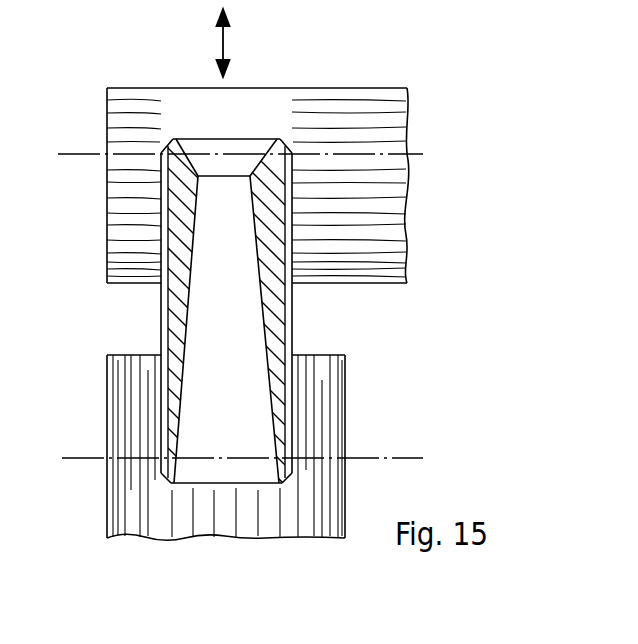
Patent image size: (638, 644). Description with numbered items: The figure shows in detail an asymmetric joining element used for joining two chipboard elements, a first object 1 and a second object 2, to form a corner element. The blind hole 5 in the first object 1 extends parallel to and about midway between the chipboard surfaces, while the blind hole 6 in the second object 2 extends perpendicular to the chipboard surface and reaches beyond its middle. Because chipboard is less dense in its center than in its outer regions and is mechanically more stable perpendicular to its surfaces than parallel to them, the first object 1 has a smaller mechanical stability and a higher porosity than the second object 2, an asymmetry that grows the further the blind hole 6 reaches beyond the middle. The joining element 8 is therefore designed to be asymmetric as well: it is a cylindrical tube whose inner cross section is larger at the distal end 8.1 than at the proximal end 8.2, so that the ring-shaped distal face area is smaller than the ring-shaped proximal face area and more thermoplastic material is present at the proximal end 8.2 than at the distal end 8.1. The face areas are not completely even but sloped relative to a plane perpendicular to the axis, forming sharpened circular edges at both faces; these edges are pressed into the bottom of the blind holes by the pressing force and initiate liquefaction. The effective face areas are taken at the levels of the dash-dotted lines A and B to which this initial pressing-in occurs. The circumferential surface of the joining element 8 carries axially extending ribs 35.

The first object 1 is at (107, 383).
The second object 2 is at (107, 108).
The blind hole 5 is at (293, 377).
The blind hole 6 is at (292, 179).
The joining element 8 is at (262, 317).
The distal end 8.1 is at (232, 470).
The proximal end 8.2 is at (200, 148).
The axially extending ribs 35 is at (168, 312).
The dash-dotted line A is at (232, 458).
The dash-dotted line B is at (229, 155).